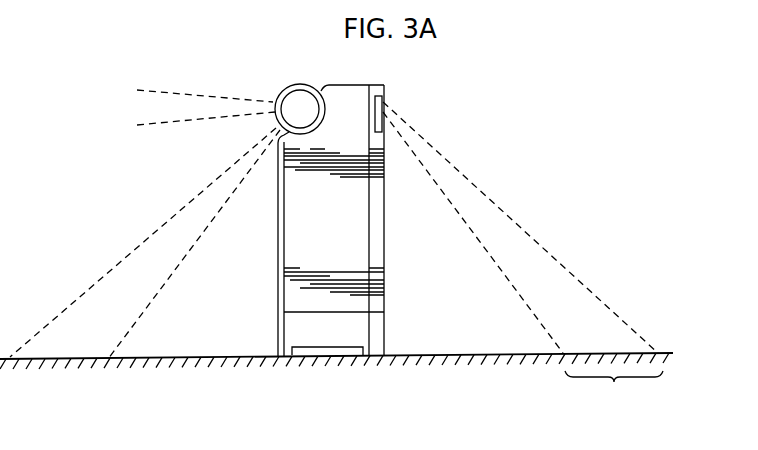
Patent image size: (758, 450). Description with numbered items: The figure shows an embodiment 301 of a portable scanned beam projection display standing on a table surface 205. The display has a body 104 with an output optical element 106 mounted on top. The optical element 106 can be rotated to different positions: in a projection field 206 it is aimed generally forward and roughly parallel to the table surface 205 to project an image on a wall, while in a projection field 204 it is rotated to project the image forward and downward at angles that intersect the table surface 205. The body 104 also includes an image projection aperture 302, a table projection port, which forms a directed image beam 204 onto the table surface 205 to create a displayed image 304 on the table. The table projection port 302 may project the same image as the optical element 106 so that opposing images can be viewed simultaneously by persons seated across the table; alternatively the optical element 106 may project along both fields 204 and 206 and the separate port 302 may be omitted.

The body 104 is at (285, 222).
The output optical element 106 is at (294, 84).
The directed image beam 204 is at (200, 188).
The table surface 205 is at (468, 353).
The projection field 206 is at (198, 94).
The embodiment 301 is at (474, 118).
The image projection aperture 302 is at (384, 99).
The displayed image 304 is at (614, 386).